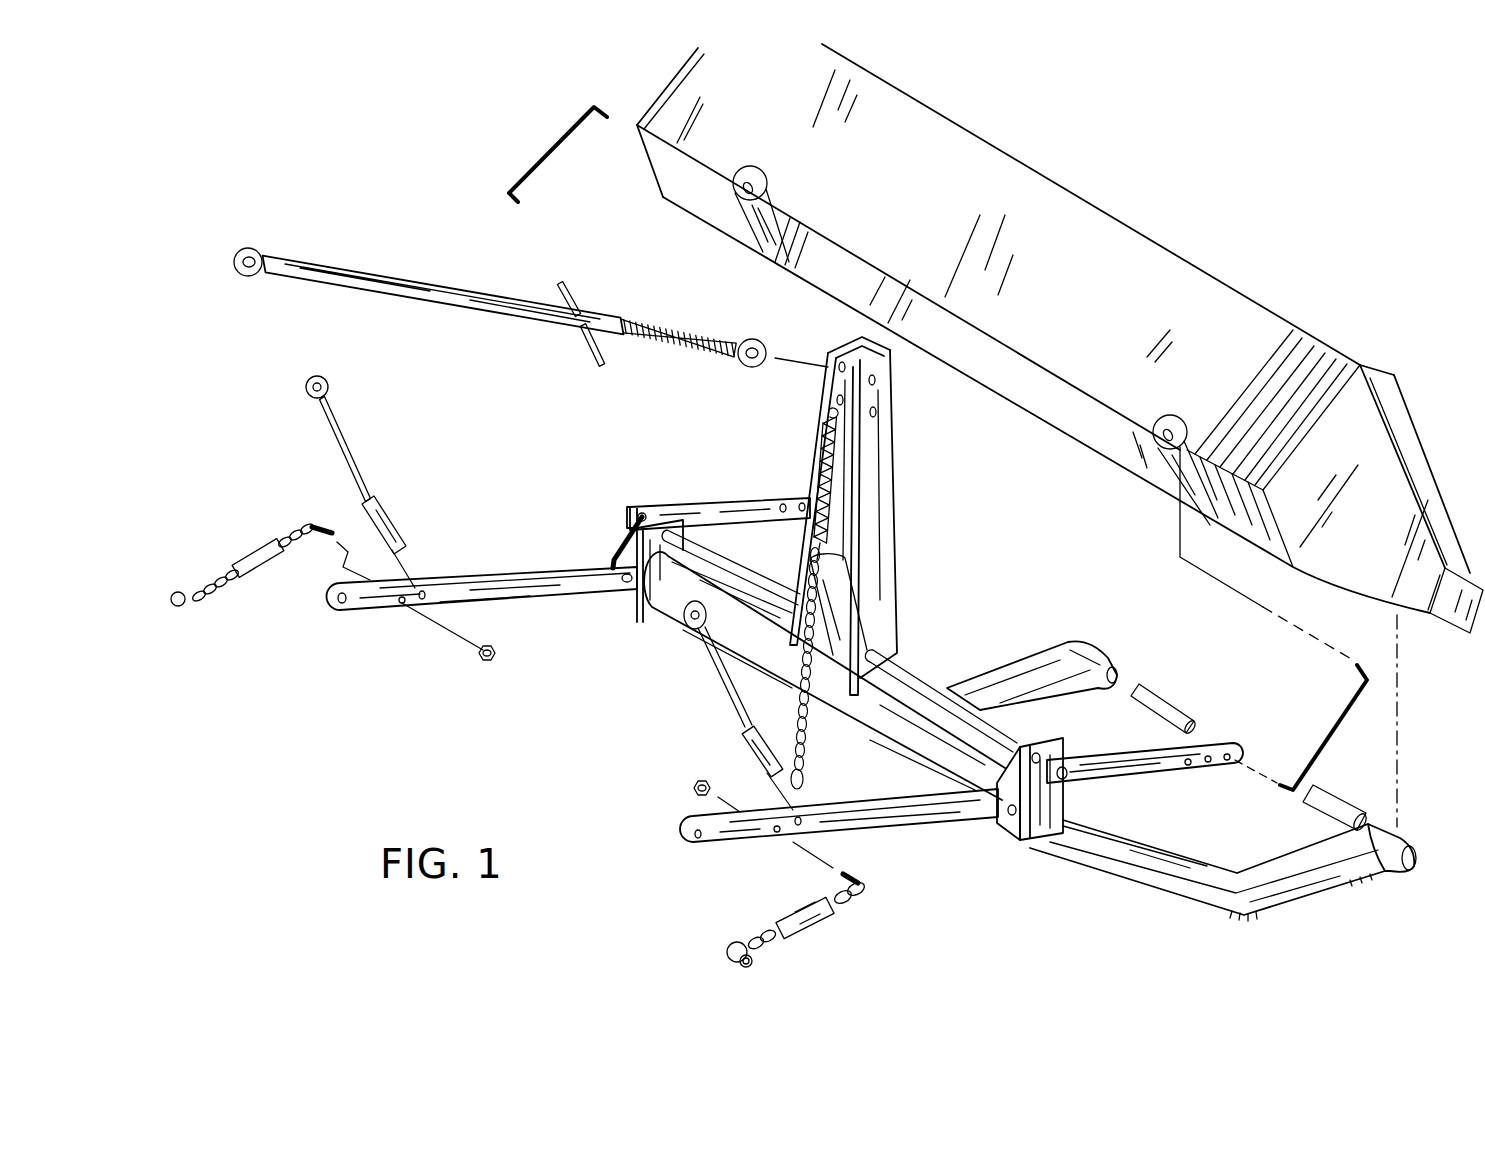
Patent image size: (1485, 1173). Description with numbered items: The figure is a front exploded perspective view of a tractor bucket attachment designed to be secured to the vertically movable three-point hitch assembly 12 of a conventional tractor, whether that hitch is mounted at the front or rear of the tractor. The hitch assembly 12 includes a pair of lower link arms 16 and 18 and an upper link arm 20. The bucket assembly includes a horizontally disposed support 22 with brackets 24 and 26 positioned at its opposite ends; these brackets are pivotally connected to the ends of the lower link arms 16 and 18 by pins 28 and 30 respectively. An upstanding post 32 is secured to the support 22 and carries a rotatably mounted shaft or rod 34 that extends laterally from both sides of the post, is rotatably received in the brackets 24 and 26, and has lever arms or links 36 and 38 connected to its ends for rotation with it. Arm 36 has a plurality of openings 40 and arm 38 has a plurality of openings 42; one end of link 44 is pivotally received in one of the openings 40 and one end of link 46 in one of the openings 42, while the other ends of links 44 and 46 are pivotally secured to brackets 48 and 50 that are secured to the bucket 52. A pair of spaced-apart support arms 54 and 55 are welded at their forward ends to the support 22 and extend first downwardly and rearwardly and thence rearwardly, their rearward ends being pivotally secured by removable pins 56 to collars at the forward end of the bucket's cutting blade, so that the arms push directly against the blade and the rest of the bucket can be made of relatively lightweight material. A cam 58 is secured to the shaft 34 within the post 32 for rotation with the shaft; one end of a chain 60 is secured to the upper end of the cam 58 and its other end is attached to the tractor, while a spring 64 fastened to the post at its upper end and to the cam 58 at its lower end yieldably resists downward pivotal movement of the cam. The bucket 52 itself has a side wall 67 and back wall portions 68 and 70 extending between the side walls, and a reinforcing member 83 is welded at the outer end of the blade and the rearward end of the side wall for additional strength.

The three-point hitch assembly 12 is at (372, 258).
The lower link arm 16 is at (740, 838).
The lower link arm 18 is at (510, 587).
The upper link arm 20 is at (498, 295).
The horizontally disposed support 22 is at (883, 703).
The bracket 24 is at (1027, 828).
The bracket 26 is at (628, 537).
The pin 28 is at (1010, 818).
The pin 30 is at (632, 600).
The upstanding post 32 is at (873, 548).
The shaft or rod 34 is at (933, 687).
The lever arm or link 36 is at (1130, 763).
The lever arm or link 38 is at (708, 502).
The openings 40 is at (1208, 765).
The openings 42 is at (777, 500).
The link 44 is at (1333, 720).
The link 46 is at (557, 140).
The bracket 48 is at (1182, 427).
The bracket 50 is at (763, 177).
The bucket 52 is at (1362, 433).
The support arm 54 is at (1037, 675).
The support arm 55 is at (1312, 892).
The removable pin 56 is at (1173, 702).
The cam 58 is at (867, 607).
The chain 60 is at (803, 743).
The spring 64 is at (833, 483).
The side wall 67 is at (1377, 522).
The back wall portion 68 is at (1082, 280).
The back wall portion 70 is at (965, 362).
The reinforcing member 83 is at (1447, 613).